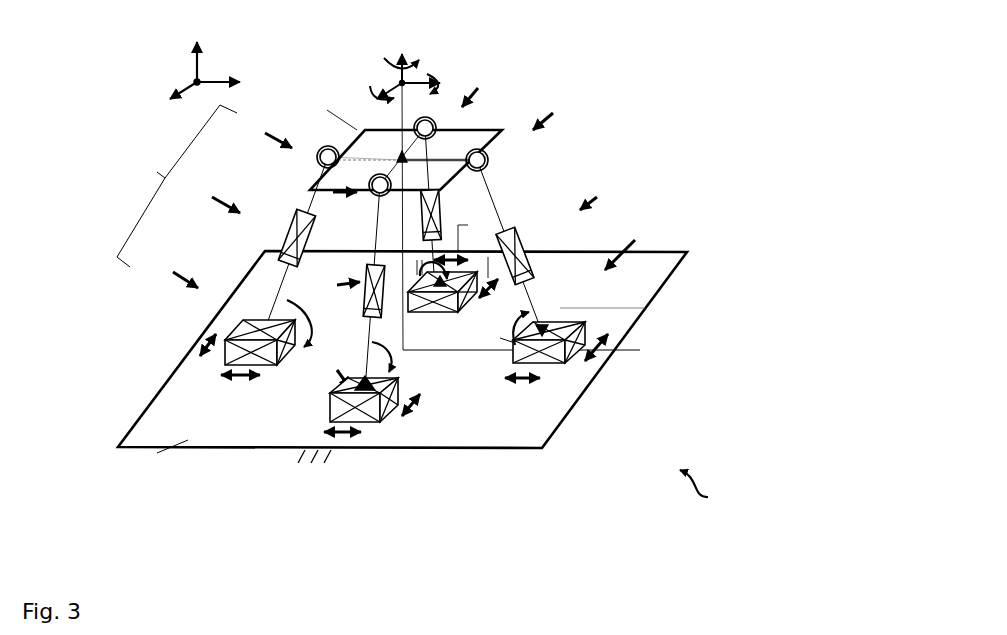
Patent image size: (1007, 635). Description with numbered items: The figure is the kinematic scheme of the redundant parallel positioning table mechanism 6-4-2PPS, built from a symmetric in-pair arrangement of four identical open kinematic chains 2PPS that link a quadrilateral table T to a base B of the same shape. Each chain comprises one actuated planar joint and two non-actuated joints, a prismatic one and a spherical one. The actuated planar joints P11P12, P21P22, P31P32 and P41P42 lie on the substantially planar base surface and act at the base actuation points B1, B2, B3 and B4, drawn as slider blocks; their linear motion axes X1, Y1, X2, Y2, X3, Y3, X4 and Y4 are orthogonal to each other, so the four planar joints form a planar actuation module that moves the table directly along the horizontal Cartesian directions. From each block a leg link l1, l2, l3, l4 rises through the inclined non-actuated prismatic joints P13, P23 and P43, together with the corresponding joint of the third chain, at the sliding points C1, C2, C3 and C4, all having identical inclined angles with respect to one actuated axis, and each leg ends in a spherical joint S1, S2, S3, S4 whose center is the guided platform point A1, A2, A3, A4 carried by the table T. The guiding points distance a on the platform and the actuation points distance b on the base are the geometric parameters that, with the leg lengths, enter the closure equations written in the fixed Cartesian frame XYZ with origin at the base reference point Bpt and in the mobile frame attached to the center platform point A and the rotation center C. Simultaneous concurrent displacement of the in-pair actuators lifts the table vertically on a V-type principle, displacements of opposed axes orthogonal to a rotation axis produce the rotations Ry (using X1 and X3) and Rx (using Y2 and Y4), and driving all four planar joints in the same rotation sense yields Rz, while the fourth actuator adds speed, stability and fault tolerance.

The table T is at (396, 139).
The base B is at (505, 433).
The guided platform point A1 is at (371, 198).
The guided platform point A2 is at (490, 157).
The guided platform point A3 is at (434, 121).
The guided platform point A4 is at (322, 146).
The base actuation point B1 is at (363, 422).
The base actuation point B2 is at (560, 362).
The base actuation point B3 is at (439, 271).
The base actuation point B4 is at (237, 343).
The sliding point C1 is at (366, 290).
The sliding point C2 is at (526, 249).
The sliding point C3 is at (441, 213).
The sliding point C4 is at (284, 224).
The link l1 is at (377, 233).
The link l2 is at (497, 205).
The link l3 is at (435, 209).
The link l4 is at (313, 205).
The spherical joint S1 is at (342, 206).
The spherical joint S2 is at (553, 113).
The spherical joint S3 is at (480, 95).
The spherical joint S4 is at (256, 135).
The planar actuated joint P11P12 is at (325, 371).
The non-actuated prismatic joint P13 is at (336, 277).
The planar actuated joint P21P22 is at (637, 247).
The non-actuated prismatic joint P23 is at (600, 197).
The planar actuated joint P31P32 is at (450, 337).
The planar actuated joint P41P42 is at (165, 271).
The non-actuated prismatic joint P43 is at (212, 199).
The actuated X axis X1 is at (412, 413).
The actuated Y axis Y1 is at (322, 430).
The actuated X axis X2 is at (622, 347).
The actuated Y axis Y2 is at (540, 383).
The actuated X axis X3 is at (486, 266).
The actuated Y axis Y3 is at (459, 237).
The actuated X axis X4 is at (197, 338).
The actuated Y axis Y4 is at (220, 375).
The rotational motion about X Rx is at (366, 100).
The rotational motion about Y Ry is at (442, 74).
The rotational motion about Z Rz is at (395, 52).
The rotation center C is at (412, 77).
The center platform point A is at (393, 151).
The guiding points distance a is at (439, 150).
The actuation points distance b is at (500, 337).
The height h is at (392, 316).
The fixed base reference point Bpt is at (415, 365).
The translational motion axes XYZ is at (200, 69).
The planar-prismatic-spherical kinematic chain 2PPS is at (163, 186).
The redundant parallel positioning mechanism 6-4-2PPS is at (717, 497).